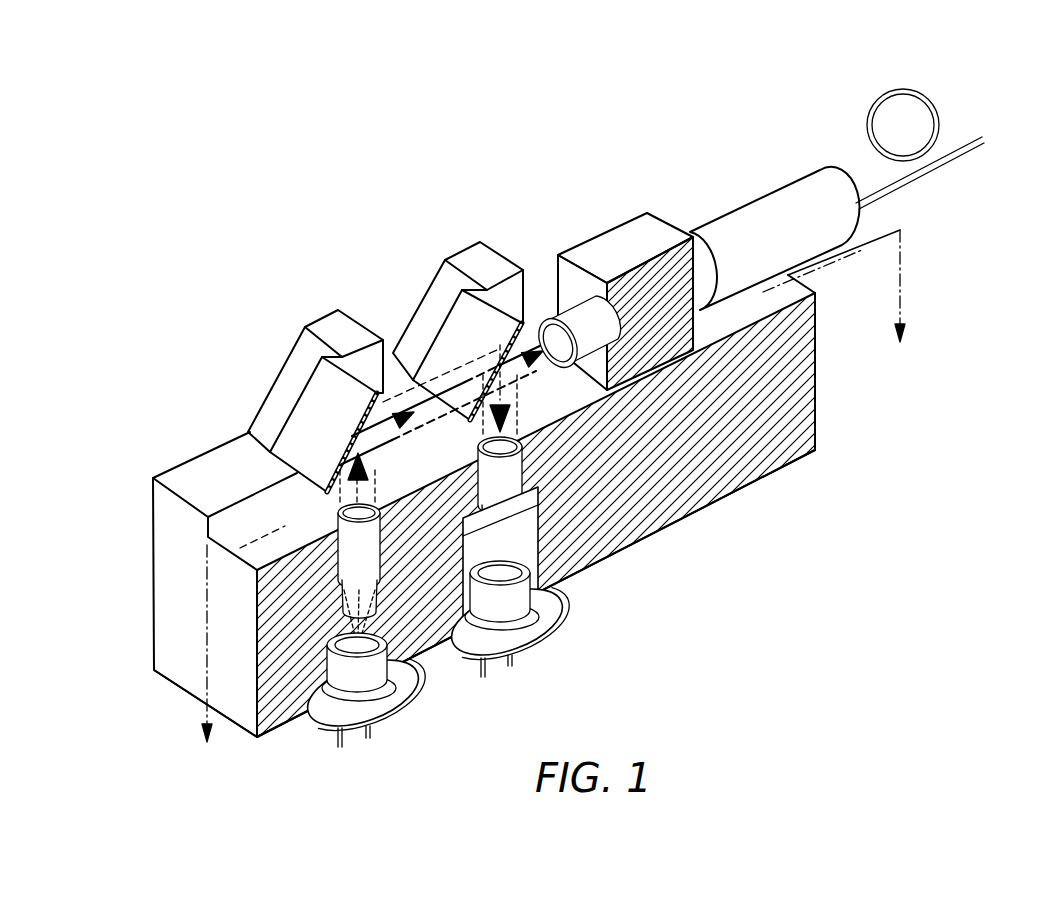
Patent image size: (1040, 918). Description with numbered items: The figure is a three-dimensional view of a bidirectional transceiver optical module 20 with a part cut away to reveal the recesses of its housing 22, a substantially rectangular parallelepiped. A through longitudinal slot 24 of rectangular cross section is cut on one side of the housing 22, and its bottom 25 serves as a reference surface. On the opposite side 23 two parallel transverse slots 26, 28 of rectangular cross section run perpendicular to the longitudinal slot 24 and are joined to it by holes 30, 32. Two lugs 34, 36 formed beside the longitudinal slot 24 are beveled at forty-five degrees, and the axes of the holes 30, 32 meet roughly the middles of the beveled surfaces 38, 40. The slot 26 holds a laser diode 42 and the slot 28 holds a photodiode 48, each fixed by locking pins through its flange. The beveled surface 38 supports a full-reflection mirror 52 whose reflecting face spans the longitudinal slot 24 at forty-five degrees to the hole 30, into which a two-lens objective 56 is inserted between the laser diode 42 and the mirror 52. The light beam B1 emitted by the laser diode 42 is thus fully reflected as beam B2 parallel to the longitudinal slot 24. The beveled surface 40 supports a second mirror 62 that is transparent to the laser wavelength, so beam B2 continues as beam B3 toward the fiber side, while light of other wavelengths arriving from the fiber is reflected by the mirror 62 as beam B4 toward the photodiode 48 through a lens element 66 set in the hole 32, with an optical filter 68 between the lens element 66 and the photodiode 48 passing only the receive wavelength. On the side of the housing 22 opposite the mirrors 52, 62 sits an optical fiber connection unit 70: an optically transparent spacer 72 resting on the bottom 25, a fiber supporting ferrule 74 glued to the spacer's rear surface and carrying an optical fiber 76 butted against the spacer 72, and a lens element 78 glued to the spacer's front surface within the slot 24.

The optical module 20 is at (528, 424).
The housing 22 is at (486, 519).
The side of the housing 23 is at (178, 703).
The longitudinal slot 24 is at (174, 465).
The bottom of the slot 25 is at (815, 296).
The transverse slot 26 is at (516, 551).
The transverse slot 28 is at (563, 568).
The hole 30 is at (335, 587).
The hole 32 is at (596, 547).
The lug 34 is at (291, 387).
The lug 36 is at (445, 309).
The beveled surface 38 is at (259, 389).
The beveled surface 40 is at (407, 305).
The laser diode 42 is at (399, 690).
The photodiode 48 is at (529, 622).
The full-reflection mirror 52 is at (288, 424).
The two-lens objective 56 is at (350, 553).
The second mirror 62 is at (456, 345).
The lens element 66 is at (609, 498).
The optical filter 68 is at (536, 593).
The optical fiber connection unit 70 is at (757, 214).
The optically transparent spacer 72 is at (644, 283).
The fiber supporting ferrule 74 is at (774, 225).
The optical fiber 76 is at (920, 124).
The lens element 78 is at (597, 278).
The light beam B1 is at (375, 467).
The light beam B2 is at (423, 365).
The light beam B3 is at (529, 292).
The light beam B4 is at (517, 397).